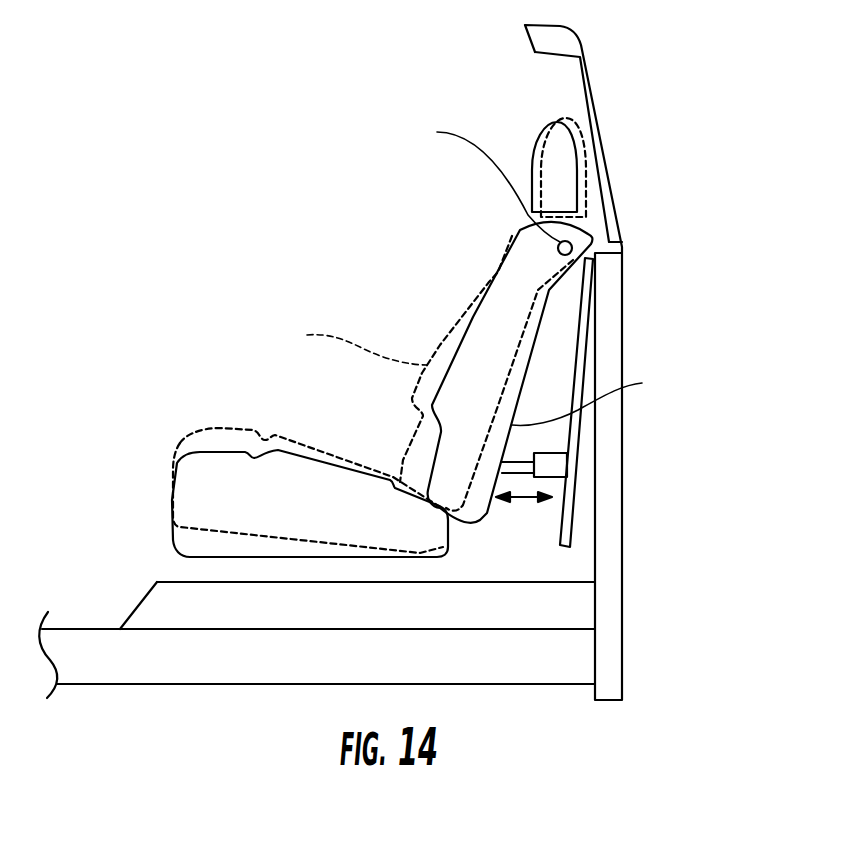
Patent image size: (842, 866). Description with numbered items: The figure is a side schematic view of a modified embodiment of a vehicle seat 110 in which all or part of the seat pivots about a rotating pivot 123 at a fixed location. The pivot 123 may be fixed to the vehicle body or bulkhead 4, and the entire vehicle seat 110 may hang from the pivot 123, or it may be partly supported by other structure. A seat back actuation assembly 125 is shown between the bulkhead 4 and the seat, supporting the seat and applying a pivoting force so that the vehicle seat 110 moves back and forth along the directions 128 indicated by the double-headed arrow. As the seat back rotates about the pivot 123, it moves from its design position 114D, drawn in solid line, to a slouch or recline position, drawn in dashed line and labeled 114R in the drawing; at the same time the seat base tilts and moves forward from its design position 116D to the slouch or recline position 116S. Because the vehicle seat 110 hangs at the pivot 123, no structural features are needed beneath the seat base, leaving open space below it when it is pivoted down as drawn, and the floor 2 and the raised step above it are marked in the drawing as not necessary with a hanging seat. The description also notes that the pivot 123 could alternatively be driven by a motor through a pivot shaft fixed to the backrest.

The vehicle floor 2 is at (287, 632).
The vehicle body/bulkhead 4 is at (577, 497).
The vehicle seat 110 is at (435, 335).
The seat back design position 114D is at (470, 315).
The seat back in reclined (slouch) position 114R is at (440, 347).
The seat base design position 116D is at (278, 450).
The seat base slouch/recline position 116S is at (365, 462).
The rotating pivot 123 is at (572, 245).
The seat back actuation assembly 125 is at (560, 465).
The directions 128 is at (522, 500).